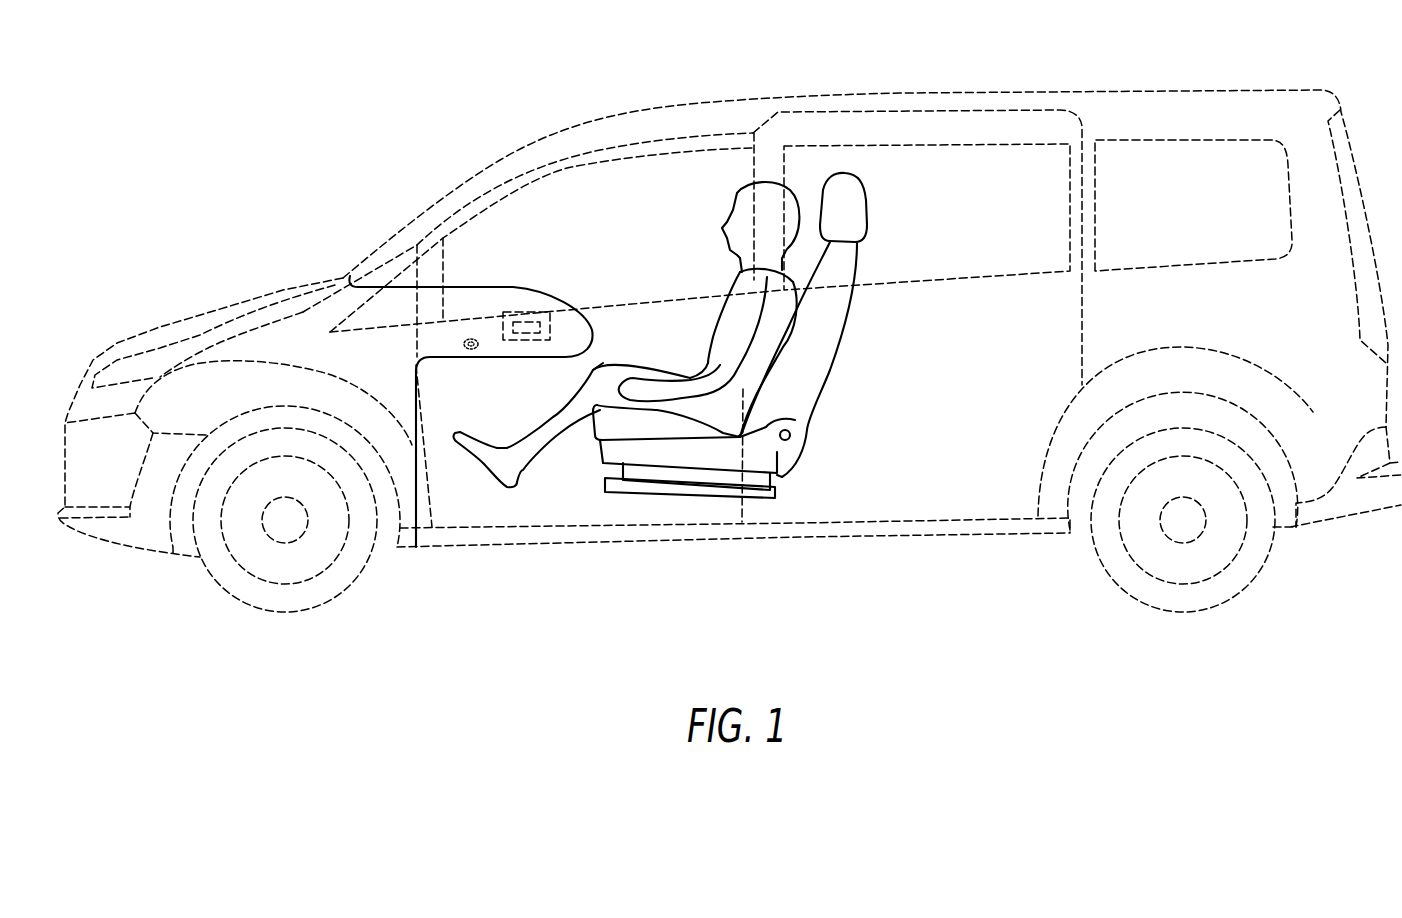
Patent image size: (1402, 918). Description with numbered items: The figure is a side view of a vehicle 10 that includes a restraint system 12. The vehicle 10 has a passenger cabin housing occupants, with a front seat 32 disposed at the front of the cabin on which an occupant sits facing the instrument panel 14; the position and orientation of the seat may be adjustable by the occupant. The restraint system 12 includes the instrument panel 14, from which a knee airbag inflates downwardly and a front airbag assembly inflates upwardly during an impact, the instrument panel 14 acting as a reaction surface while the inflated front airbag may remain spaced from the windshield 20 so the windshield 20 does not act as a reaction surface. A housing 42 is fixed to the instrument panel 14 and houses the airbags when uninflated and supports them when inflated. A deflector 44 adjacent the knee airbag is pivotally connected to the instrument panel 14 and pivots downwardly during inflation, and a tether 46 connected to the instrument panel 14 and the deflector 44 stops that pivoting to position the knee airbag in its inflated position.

The vehicle 10 is at (977, 53).
The restraint system 12 is at (330, 224).
The instrument panel 14 is at (458, 285).
The windshield 20 is at (480, 183).
The front seat 32 is at (832, 348).
The housing 42 is at (557, 323).
The deflector 44 is at (505, 358).
The tether 46 is at (471, 338).